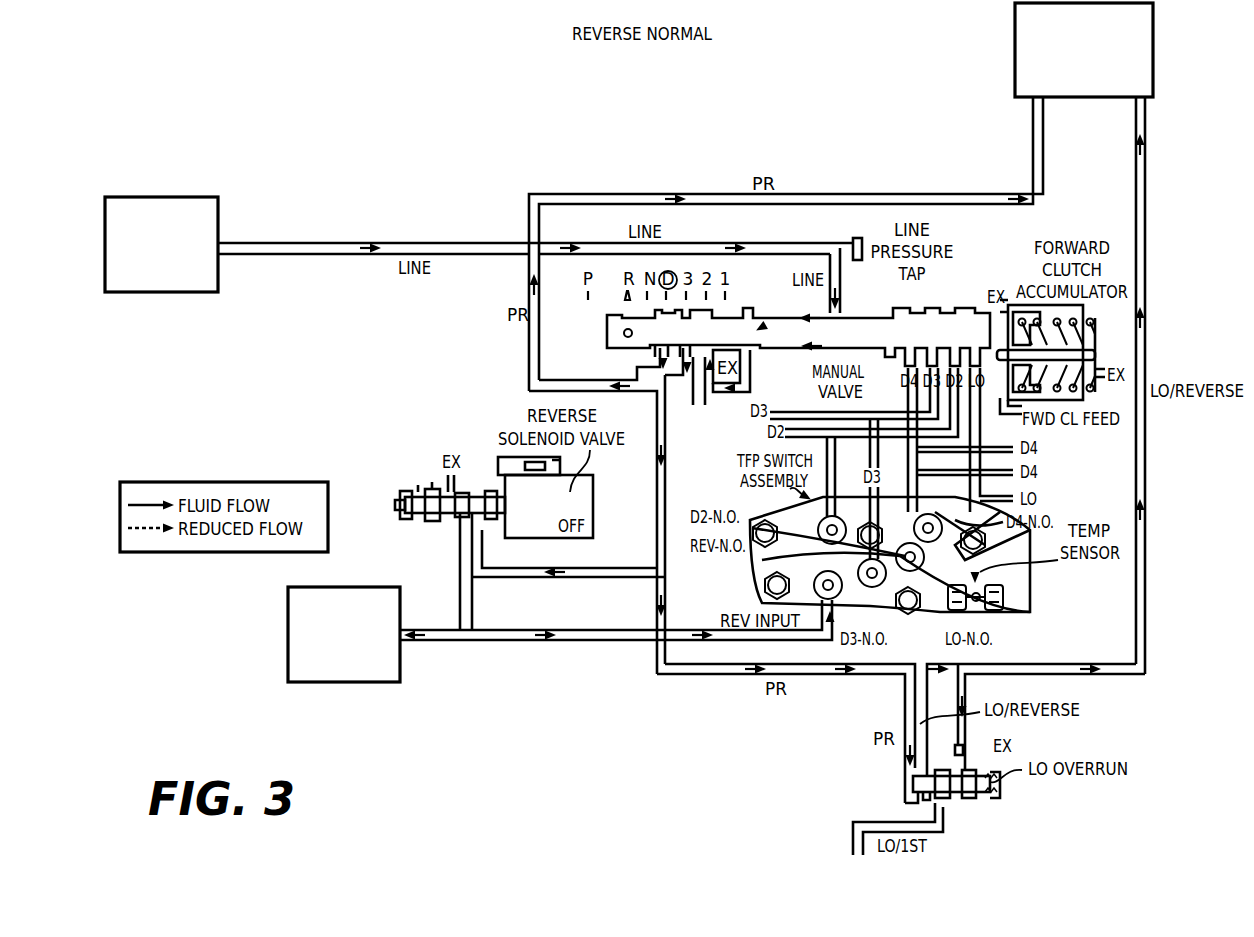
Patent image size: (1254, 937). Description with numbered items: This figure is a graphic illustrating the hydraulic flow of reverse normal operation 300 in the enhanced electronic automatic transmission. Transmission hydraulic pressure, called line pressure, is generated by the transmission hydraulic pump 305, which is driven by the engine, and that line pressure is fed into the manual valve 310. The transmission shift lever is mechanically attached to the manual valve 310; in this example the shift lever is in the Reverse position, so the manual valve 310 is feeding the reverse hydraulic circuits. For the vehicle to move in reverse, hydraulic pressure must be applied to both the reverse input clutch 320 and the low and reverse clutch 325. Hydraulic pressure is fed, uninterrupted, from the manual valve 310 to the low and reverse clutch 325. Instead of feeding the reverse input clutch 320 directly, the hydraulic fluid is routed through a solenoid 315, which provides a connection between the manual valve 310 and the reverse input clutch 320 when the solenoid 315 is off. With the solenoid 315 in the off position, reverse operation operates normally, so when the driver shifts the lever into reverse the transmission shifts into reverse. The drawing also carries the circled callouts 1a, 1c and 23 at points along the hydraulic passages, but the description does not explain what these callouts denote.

The reverse normal operation 300 is at (508, 128).
The transmission hydraulic pump 305 is at (178, 197).
The manual valve 310 is at (848, 333).
The solenoid 315 is at (522, 492).
The reverse input clutch 320 is at (390, 683).
The low and reverse clutch 325 is at (1020, 98).
The manual valve feed port callout 1a is at (699, 400).
The reverse input port callout 1c is at (748, 576).
The exhaust callout 23 is at (971, 747).